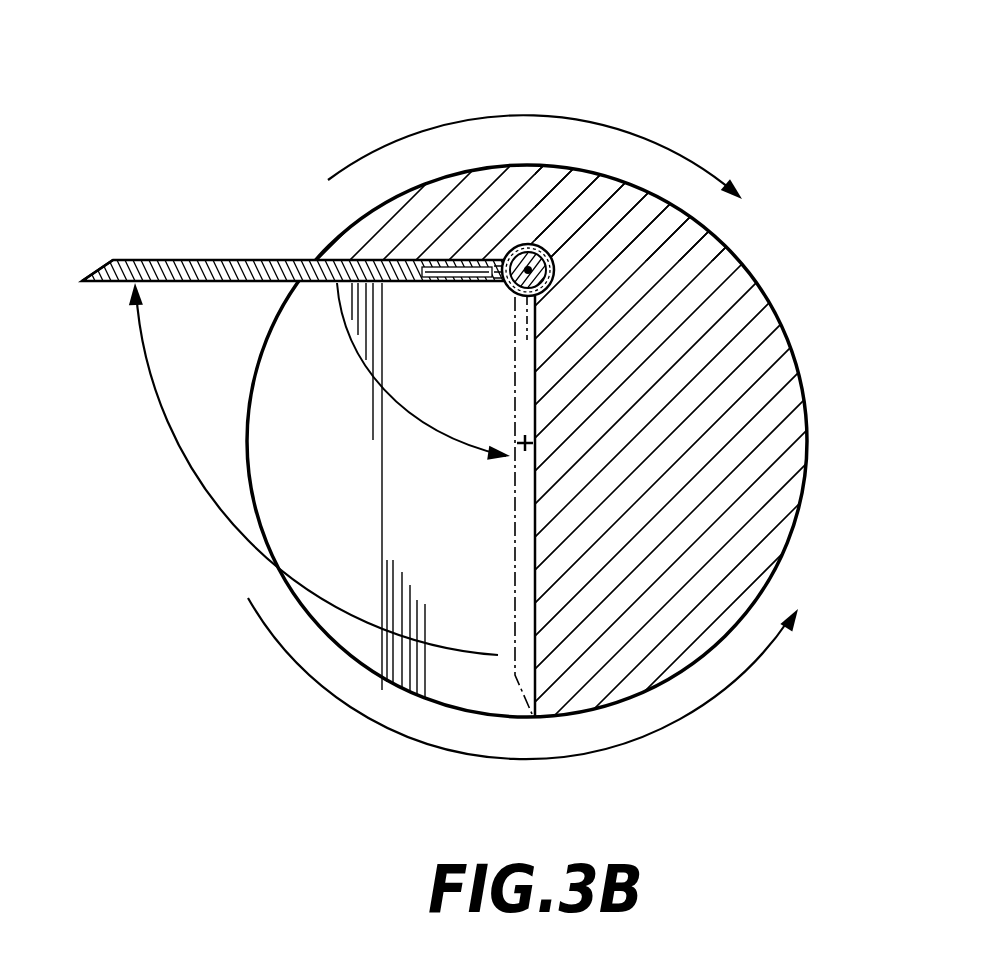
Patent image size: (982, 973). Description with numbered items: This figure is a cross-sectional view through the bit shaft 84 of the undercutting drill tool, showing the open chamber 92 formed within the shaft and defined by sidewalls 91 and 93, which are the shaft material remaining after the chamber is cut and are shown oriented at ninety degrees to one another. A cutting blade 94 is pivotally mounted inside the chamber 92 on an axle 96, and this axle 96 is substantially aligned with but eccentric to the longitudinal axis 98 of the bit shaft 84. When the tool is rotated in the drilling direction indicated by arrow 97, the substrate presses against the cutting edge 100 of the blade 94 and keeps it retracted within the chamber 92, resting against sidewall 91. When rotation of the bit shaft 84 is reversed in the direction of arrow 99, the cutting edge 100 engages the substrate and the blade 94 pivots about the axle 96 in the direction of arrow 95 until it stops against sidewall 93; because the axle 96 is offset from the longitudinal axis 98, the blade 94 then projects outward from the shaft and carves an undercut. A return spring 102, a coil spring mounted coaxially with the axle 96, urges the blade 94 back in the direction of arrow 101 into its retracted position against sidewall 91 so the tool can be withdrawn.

The bit shaft 84 is at (772, 350).
The sidewall 91 is at (533, 523).
The open chamber 92 is at (318, 514).
The sidewall 93 is at (398, 264).
The cutting blade 94 is at (241, 260).
The arrow 95 is at (173, 438).
The axle 96 is at (524, 266).
The arrow 97 is at (480, 112).
The longitudinal axis 98 is at (520, 442).
The arrow 99 is at (643, 737).
The cutting edge 100 is at (105, 262).
The arrow 101 is at (368, 373).
The return spring 102 is at (548, 272).